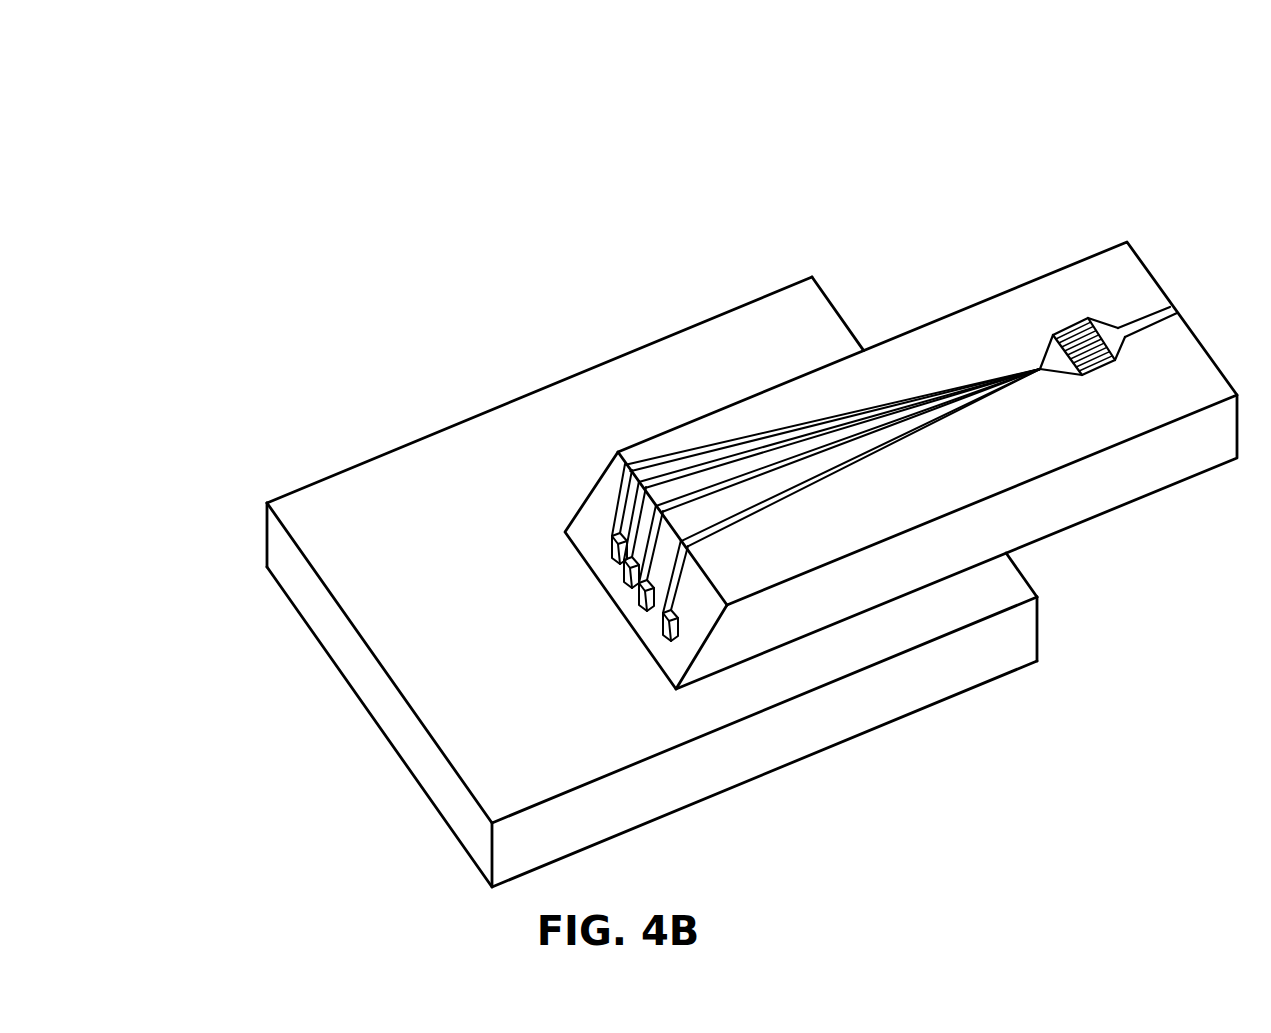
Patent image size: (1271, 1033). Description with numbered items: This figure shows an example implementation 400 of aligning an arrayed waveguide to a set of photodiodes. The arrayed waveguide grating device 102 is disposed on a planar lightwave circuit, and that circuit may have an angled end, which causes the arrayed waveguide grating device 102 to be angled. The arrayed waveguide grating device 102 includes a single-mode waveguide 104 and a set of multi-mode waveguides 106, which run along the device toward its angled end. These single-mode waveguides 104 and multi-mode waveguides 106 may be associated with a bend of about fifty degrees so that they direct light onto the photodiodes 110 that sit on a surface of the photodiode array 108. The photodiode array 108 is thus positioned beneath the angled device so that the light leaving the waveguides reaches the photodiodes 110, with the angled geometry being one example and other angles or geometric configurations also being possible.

The example implementation 400 is at (104, 48).
The arrayed waveguide grating device 102 is at (901, 465).
The single-mode waveguide 104 is at (833, 458).
The multi-mode waveguides 106 is at (914, 397).
The photodiode array 108 is at (568, 697).
The photodiodes 110 is at (613, 552).